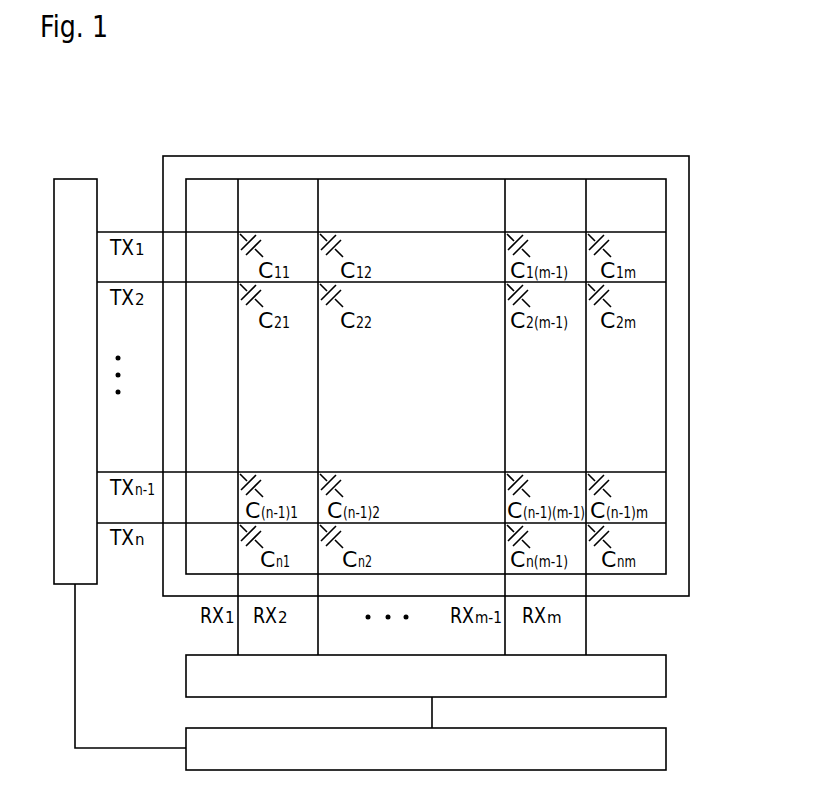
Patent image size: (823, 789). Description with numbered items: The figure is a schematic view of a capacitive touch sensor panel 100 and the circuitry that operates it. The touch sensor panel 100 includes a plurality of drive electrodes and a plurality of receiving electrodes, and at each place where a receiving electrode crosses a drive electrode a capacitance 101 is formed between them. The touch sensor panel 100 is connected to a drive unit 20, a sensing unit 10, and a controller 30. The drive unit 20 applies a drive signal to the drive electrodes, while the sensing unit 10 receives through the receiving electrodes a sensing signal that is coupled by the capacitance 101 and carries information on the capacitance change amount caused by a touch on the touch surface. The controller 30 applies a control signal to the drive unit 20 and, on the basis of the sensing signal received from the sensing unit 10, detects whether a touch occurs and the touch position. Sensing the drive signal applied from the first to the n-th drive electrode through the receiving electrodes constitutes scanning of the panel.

The touch sensor panel 100 is at (686, 156).
The capacitance 101 is at (256, 233).
The drive unit 20 is at (76, 179).
The sensing unit 10 is at (666, 676).
The controller 30 is at (666, 749).